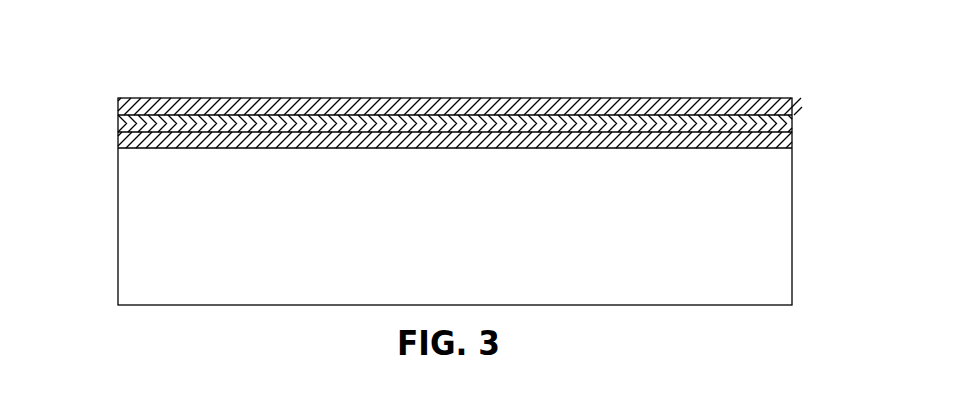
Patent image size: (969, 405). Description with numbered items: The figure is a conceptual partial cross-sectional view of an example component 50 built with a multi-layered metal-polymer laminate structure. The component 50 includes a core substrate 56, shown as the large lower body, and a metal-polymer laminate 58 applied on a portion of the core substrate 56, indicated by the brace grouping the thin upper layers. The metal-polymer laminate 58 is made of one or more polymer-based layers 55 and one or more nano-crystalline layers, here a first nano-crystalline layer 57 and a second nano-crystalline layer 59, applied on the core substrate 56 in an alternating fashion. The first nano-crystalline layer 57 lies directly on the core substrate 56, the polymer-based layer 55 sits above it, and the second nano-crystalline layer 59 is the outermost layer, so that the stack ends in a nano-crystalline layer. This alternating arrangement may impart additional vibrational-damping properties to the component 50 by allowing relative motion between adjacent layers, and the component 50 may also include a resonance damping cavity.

The component 50 is at (113, 40).
The core substrate 56 is at (459, 242).
The metal-polymer laminate 58 is at (450, 123).
The second nano-crystalline layer 59 is at (118, 100).
The polymer-based layer 55 is at (118, 125).
The first nano-crystalline layer 57 is at (118, 140).